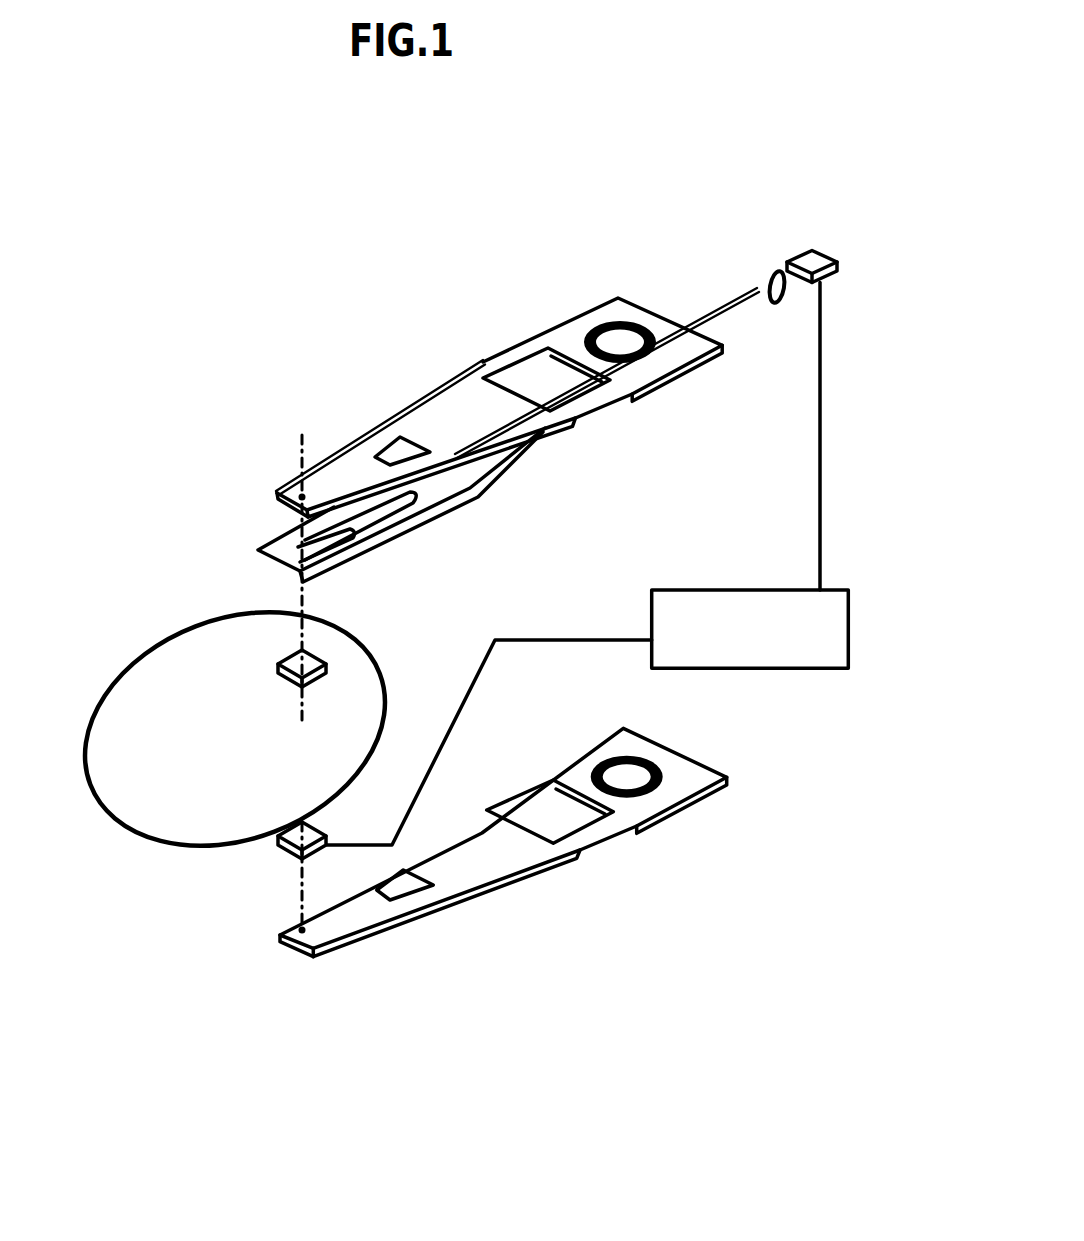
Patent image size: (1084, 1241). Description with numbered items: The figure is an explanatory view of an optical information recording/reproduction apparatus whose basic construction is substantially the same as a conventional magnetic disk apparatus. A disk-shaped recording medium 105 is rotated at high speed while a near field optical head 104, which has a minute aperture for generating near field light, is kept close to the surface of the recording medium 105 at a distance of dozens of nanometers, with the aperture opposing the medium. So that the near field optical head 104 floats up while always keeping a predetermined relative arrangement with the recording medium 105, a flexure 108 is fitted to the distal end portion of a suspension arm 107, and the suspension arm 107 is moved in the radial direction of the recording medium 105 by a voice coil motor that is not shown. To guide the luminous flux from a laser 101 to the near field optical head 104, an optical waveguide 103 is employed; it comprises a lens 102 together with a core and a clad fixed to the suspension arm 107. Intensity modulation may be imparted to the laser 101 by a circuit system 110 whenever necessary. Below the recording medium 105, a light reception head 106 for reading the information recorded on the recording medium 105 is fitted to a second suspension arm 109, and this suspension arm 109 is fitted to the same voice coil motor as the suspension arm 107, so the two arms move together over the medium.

The laser 101 is at (800, 252).
The lens 102 is at (765, 275).
The optical waveguide 103 is at (733, 311).
The near field optical head 104 is at (328, 661).
The recording medium 105 is at (150, 825).
The light reception head 106 is at (292, 862).
The suspension arm 107 is at (447, 402).
The flexure 108 is at (262, 556).
The suspension arm 109 is at (527, 880).
The circuit system 110 is at (822, 670).